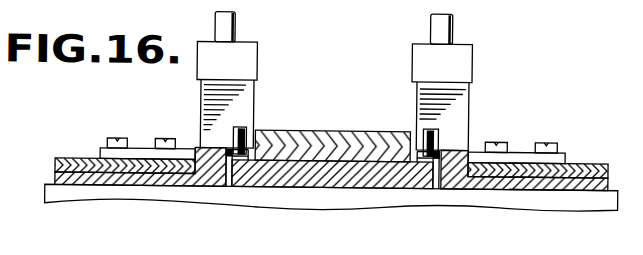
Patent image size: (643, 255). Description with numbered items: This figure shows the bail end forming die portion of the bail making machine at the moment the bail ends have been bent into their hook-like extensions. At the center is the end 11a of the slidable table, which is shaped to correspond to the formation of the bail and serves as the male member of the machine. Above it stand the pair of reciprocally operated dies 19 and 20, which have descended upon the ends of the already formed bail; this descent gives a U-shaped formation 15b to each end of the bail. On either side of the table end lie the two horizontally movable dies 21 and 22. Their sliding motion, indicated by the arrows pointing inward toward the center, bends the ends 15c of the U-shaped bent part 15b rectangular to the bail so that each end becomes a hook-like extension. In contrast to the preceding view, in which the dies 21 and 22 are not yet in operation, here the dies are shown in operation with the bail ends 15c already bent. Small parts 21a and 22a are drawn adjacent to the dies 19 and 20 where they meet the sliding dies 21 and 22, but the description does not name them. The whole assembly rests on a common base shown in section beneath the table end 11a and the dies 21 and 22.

The end of the table 11a is at (320, 142).
The U-shaped formation 15b is at (228, 161).
The bail ends 15c is at (247, 161).
The reciprocally operated die 19 is at (248, 98).
The reciprocally operated die 20 is at (468, 91).
The horizontally movable die 21 is at (150, 126).
The left pin 21a is at (248, 129).
The horizontally movable die 22 is at (505, 120).
The right pin 22a is at (433, 129).